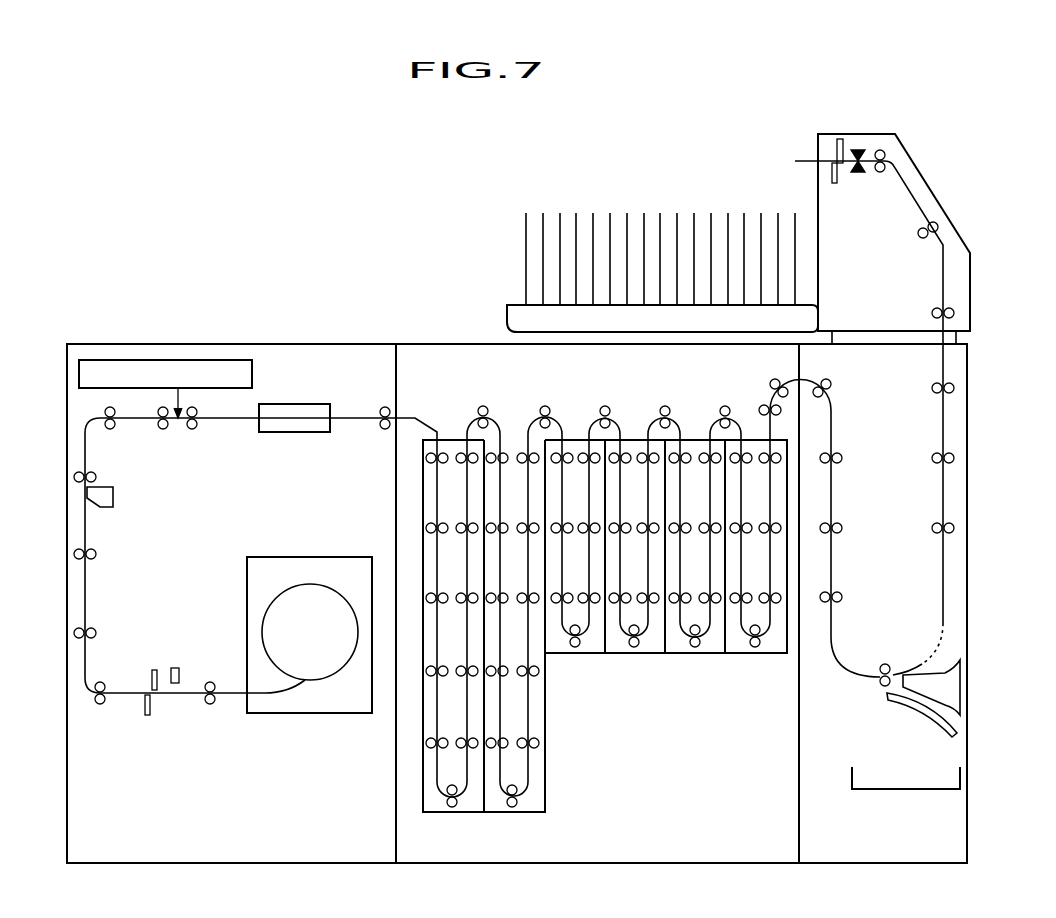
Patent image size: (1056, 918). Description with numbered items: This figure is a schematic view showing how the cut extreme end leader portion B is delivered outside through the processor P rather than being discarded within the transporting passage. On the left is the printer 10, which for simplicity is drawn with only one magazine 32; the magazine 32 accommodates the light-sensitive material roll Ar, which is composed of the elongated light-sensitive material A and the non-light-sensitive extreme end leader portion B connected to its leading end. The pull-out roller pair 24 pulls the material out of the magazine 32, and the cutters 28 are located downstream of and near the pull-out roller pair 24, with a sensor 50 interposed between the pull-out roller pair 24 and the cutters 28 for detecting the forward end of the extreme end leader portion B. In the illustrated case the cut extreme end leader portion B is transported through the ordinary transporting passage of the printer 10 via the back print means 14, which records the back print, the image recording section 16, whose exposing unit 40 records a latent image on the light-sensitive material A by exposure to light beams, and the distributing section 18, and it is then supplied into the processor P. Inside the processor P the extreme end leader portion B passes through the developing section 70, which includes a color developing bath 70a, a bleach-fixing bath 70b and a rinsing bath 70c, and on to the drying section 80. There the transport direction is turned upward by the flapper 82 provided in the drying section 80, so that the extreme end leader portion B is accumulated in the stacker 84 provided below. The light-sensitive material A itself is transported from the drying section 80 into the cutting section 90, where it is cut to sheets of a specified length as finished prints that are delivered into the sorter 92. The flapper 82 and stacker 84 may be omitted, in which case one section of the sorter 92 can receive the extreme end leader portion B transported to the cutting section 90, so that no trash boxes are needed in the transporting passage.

The printer 10 is at (287, 331).
The back print means 14 is at (108, 493).
The image recording section 16 is at (202, 430).
The distributing section 18 is at (298, 412).
The pull-out roller pair 24 is at (210, 703).
The cutters 28 is at (153, 688).
The magazine 32 is at (305, 557).
The exposing unit 40 is at (90, 371).
The sensor 50 is at (176, 667).
The developing section 70 is at (497, 863).
The color developing bath 70a is at (439, 812).
The bleach-fixing bath 70b is at (536, 806).
The rinsing bath 70c is at (767, 673).
The drying section 80 is at (960, 440).
The flapper 82 is at (950, 683).
The stacker 84 is at (940, 790).
The cutting section 90 is at (923, 176).
The sorter 92 is at (692, 188).
The processor P is at (497, 192).
The light-sensitive material A is at (943, 505).
The extreme end leader portion B is at (957, 731).
The light-sensitive material roll Ar is at (330, 665).